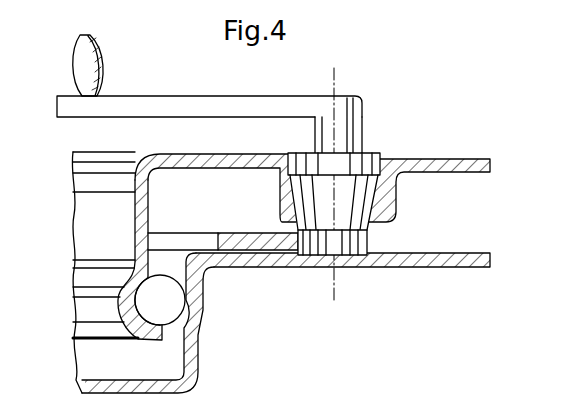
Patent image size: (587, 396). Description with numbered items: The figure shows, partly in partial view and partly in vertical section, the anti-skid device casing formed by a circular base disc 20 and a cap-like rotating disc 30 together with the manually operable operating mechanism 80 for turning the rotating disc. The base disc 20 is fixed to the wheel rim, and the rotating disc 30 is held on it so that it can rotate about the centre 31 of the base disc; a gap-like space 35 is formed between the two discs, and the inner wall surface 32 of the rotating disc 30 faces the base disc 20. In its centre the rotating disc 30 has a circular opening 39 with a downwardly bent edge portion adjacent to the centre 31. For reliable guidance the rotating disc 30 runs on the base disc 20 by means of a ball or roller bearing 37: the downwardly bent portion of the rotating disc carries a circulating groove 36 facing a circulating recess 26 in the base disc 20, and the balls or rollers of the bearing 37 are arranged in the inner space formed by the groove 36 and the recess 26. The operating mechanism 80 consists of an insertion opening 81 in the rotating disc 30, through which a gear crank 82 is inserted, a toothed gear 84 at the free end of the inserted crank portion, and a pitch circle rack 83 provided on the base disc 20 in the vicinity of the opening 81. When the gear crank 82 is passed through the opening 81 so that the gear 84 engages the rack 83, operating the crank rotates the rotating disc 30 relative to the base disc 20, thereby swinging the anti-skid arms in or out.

The base disc 20 is at (452, 260).
The recessed portion 26 is at (199, 312).
The rotating disc 30 is at (468, 159).
The centre 31 is at (336, 80).
The inner wall surface 32 is at (216, 170).
The gap-like space 35 is at (162, 207).
The circulating groove 36 is at (118, 307).
The ball or roller bearing 37 is at (151, 312).
The circular opening 39 is at (105, 152).
The operating mechanism 80 is at (383, 131).
The insertion opening 81 is at (372, 198).
The gear crank 82 is at (152, 96).
The pitch circle rack 83 is at (293, 243).
The toothed gear 84 is at (367, 248).